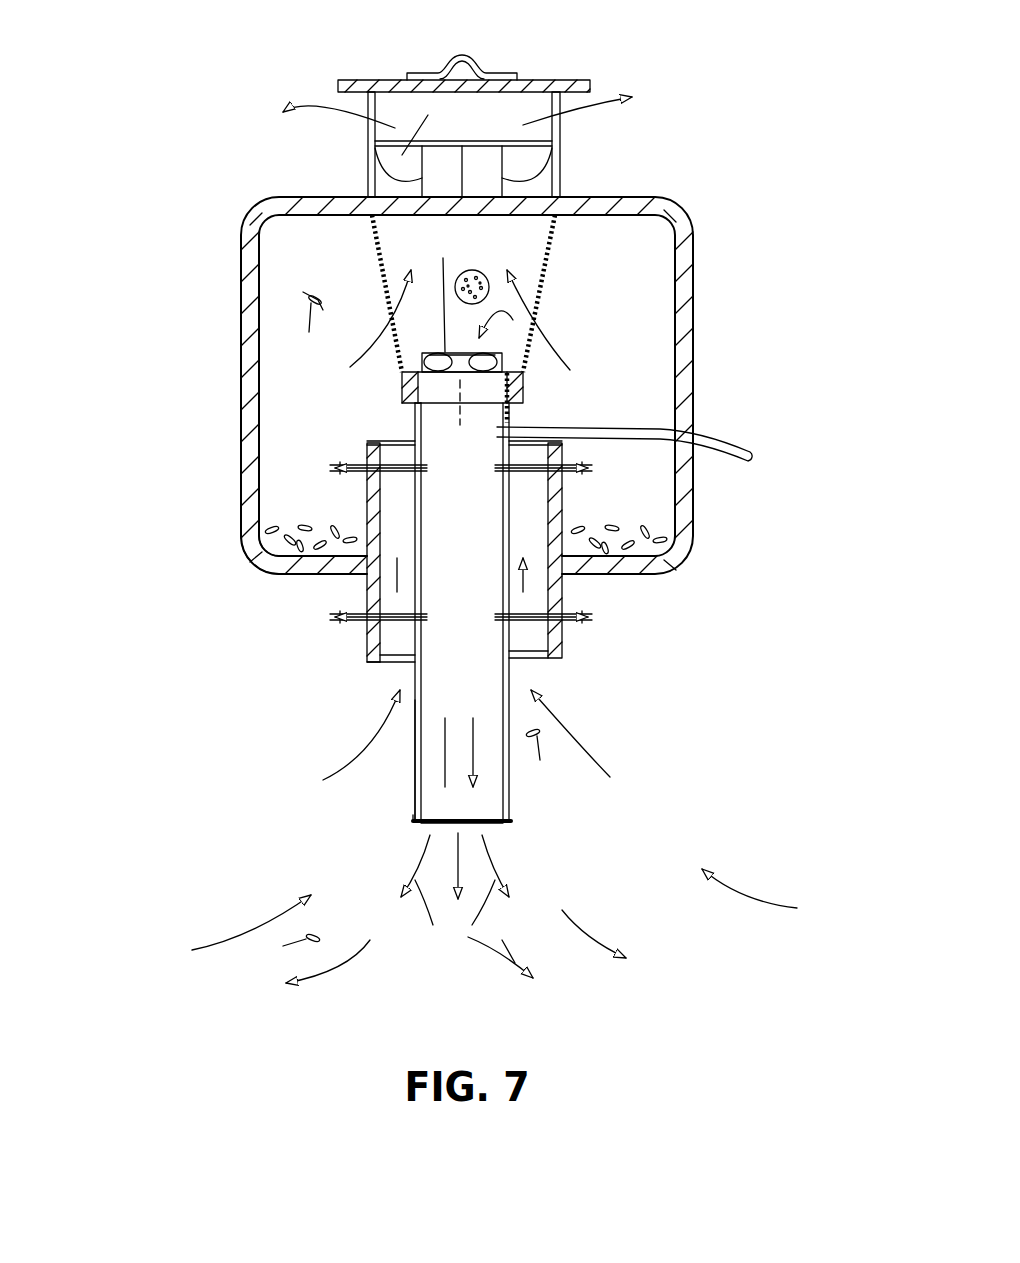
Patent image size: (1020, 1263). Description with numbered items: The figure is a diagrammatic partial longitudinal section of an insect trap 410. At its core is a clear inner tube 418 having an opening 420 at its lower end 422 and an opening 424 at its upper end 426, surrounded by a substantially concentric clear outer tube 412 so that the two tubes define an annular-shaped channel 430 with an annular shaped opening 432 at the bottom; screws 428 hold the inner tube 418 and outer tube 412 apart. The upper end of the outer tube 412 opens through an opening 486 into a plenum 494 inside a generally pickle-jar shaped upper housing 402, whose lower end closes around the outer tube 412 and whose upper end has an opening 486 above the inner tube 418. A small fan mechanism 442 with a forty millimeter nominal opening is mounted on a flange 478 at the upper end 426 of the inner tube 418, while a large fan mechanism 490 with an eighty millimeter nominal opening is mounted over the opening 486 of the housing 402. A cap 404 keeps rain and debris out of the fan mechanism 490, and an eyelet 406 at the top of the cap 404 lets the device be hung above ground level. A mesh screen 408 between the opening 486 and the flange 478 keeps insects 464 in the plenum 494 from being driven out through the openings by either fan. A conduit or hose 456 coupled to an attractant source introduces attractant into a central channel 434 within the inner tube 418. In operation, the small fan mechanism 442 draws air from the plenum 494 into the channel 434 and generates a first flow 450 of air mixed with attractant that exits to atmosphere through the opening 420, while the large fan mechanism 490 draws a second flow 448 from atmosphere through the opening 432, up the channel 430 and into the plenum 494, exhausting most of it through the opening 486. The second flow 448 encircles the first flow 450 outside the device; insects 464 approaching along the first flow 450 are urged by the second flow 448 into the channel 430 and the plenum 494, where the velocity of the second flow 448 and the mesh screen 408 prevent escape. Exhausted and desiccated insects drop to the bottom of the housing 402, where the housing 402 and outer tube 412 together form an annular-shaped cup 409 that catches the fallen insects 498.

The upper housing 402 is at (695, 500).
The cap 404 is at (368, 80).
The eyelet 406 is at (470, 62).
The mesh screen 408 is at (538, 290).
The annular-shaped cup 409 is at (237, 512).
The insect trap 410 is at (180, 202).
The outer tube 412 is at (563, 587).
The inner tube 418 is at (413, 765).
The opening 420 is at (427, 828).
The lower end 422 is at (413, 802).
The opening 424 is at (488, 377).
The upper end 426 is at (413, 422).
The screws 428 is at (323, 628).
The annular-shaped channel 430 is at (537, 495).
The annular shaped opening 432 is at (380, 667).
The central channel 434 is at (440, 500).
The small fan mechanism 442 is at (440, 288).
The second flow 448 is at (350, 760).
The first flow 450 is at (607, 912).
The conduit or hose 456 is at (763, 452).
The insects 464 is at (449, 637).
The flange 478 is at (523, 388).
The opening 486 is at (522, 218).
The large fan mechanism 490 is at (560, 165).
The plenum 494 is at (653, 280).
The fallen insects 498 is at (256, 569).